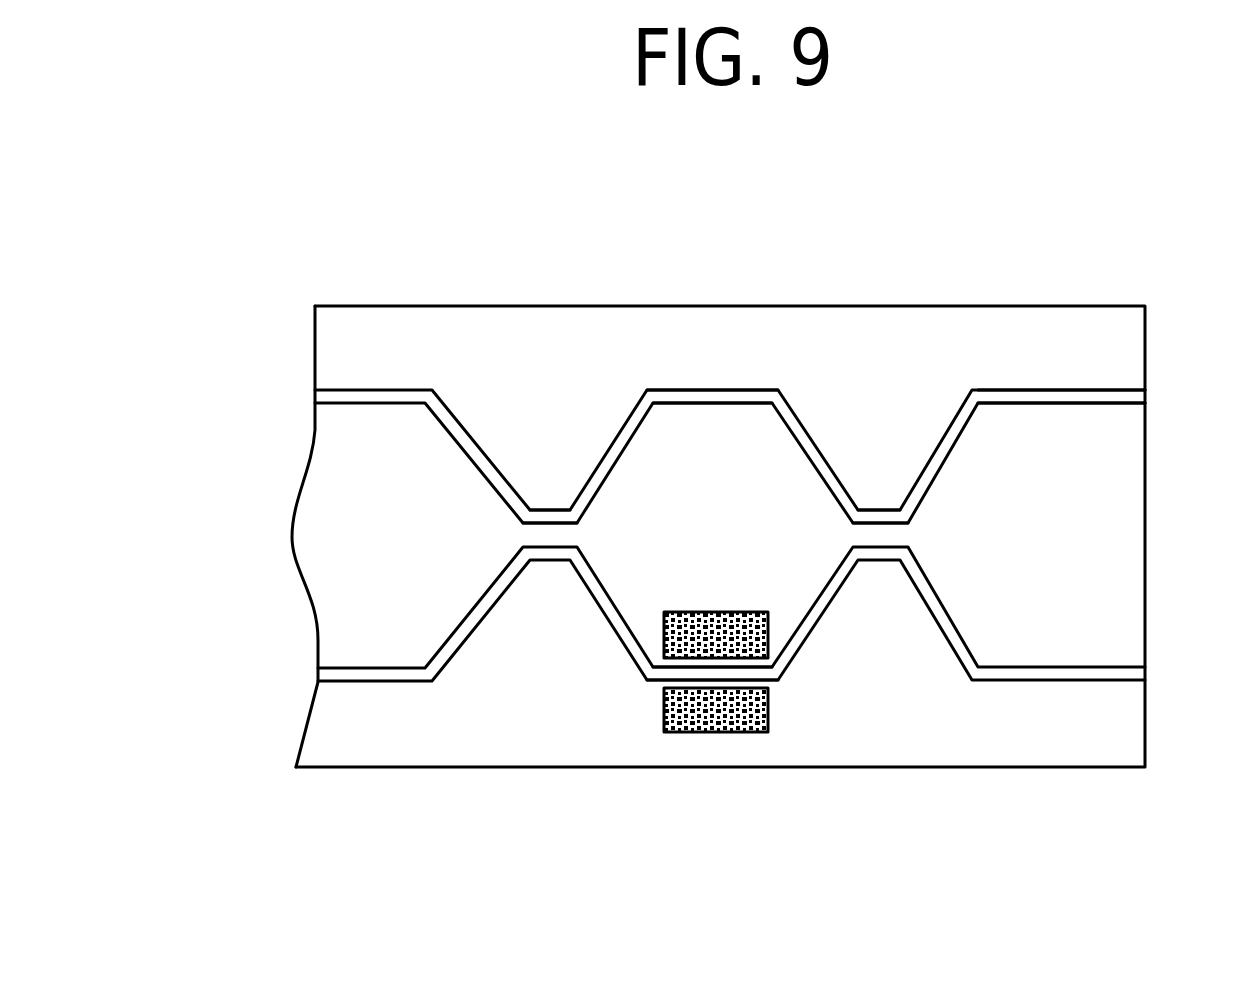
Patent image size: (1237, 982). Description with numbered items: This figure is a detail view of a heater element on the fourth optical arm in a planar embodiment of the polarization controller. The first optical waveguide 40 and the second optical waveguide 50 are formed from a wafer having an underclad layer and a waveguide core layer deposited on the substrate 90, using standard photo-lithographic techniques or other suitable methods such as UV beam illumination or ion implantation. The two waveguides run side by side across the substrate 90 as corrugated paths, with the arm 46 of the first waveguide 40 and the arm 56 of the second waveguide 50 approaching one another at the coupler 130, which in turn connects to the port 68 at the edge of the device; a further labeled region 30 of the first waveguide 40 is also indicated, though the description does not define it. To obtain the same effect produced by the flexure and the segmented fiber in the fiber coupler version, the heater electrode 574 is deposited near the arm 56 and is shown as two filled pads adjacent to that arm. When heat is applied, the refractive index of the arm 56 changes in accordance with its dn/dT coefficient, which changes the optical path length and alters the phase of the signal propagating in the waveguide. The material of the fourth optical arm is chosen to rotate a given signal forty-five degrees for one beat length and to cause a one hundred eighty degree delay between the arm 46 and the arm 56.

The substrate 90 is at (405, 743).
The first optical waveguide 40 is at (350, 398).
The optical arm 46 is at (712, 398).
The trough of first layer 30 is at (548, 517).
The third coupler 130 is at (890, 517).
The port 68 is at (1145, 395).
The second optical waveguide 50 is at (362, 673).
The optical arm 56 is at (792, 650).
The heater electrode 574 is at (665, 640).